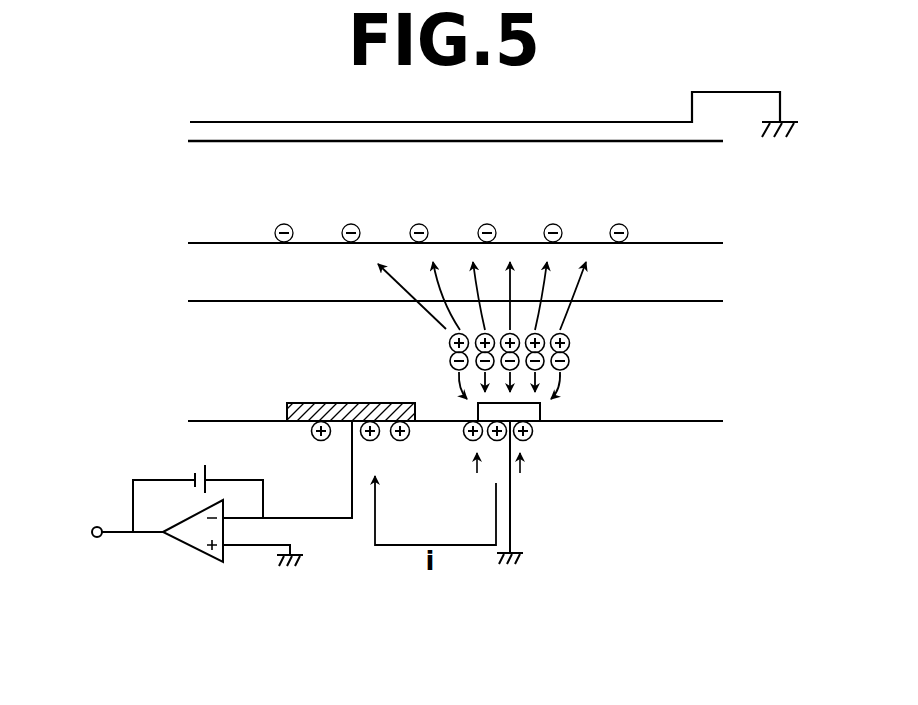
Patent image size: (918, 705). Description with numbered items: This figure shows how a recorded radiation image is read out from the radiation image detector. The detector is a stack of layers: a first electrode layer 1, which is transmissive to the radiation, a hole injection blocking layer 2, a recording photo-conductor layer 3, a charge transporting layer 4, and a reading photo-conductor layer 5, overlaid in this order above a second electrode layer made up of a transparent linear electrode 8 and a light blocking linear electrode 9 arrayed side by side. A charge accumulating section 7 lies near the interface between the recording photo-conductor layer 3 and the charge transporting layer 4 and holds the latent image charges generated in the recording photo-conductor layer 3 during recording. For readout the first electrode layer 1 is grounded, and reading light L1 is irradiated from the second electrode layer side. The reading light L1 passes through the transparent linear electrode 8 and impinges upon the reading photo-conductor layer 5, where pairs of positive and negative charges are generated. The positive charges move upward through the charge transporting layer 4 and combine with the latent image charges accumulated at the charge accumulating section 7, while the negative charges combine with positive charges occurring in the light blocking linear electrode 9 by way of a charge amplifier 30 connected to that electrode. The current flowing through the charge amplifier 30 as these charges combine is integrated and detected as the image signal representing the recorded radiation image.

The first electrode layer 1 is at (200, 121).
The hole injection blocking layer 2 is at (200, 134).
The recording photo-conductor layer 3 is at (200, 163).
The charge transporting layer 4 is at (200, 270).
The reading photo-conductor layer 5 is at (200, 325).
The charge accumulating section 7 is at (220, 241).
The transparent linear electrode 8 is at (541, 411).
The light blocking linear electrode 9 is at (297, 422).
The charge amplifier 30 is at (223, 572).
The reading light L1 is at (565, 453).